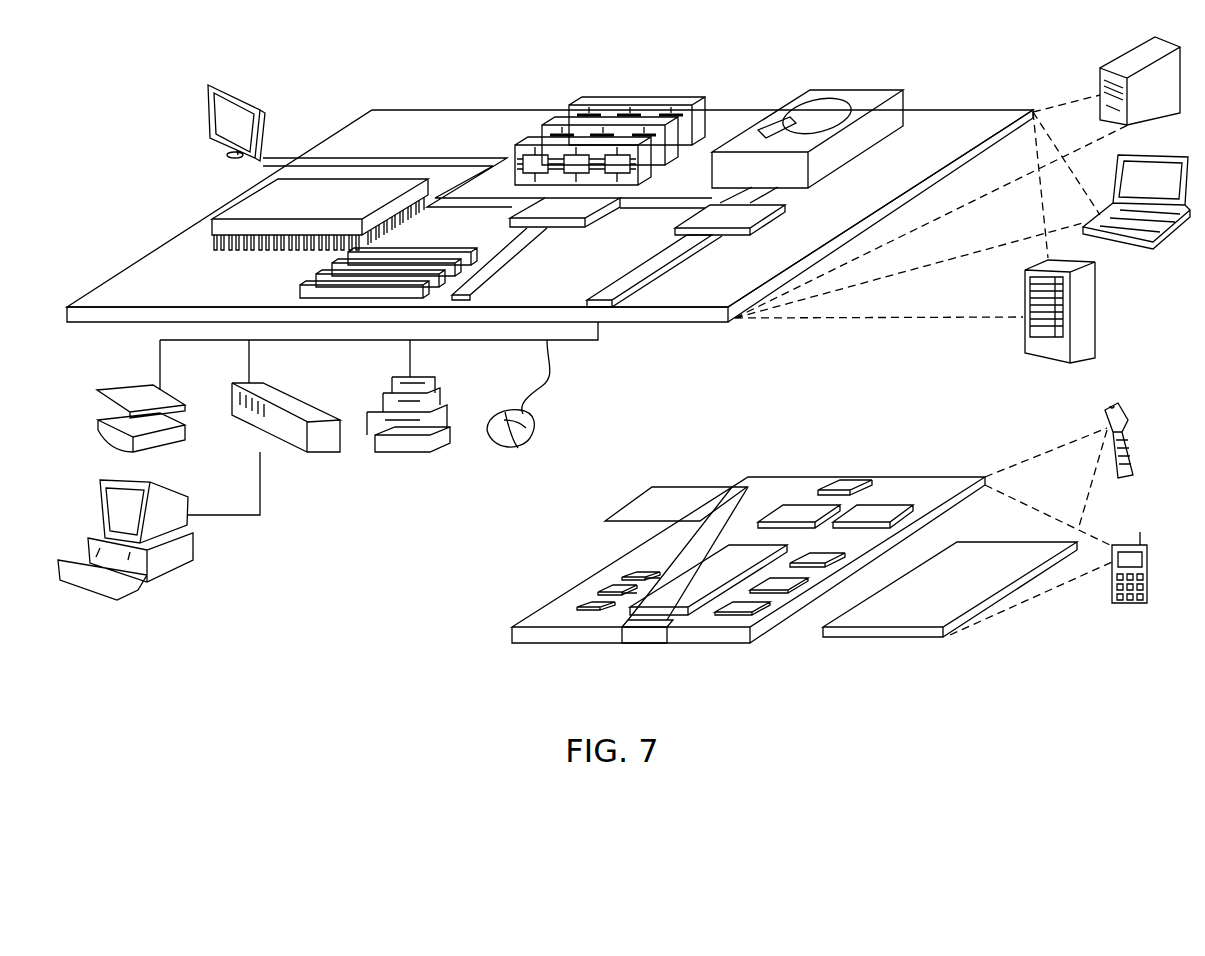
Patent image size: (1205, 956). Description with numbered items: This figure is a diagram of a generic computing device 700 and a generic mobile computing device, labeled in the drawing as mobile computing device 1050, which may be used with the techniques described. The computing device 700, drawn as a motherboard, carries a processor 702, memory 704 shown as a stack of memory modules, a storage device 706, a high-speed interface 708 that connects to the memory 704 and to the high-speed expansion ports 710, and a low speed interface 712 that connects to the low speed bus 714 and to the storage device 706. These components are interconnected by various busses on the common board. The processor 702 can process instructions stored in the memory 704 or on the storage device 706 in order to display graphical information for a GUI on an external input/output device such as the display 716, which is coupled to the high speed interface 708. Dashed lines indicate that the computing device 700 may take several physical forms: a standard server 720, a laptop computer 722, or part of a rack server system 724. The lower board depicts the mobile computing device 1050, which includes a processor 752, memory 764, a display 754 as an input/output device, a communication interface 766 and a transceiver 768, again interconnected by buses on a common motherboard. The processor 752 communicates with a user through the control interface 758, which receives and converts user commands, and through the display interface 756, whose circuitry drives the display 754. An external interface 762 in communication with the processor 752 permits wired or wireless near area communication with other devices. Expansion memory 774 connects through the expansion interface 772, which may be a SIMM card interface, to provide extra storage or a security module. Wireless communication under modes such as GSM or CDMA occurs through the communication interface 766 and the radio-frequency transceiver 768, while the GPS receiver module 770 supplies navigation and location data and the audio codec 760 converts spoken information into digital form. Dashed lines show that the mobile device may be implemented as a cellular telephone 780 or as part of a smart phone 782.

The computing device 700 is at (328, 62).
The processor 702 is at (232, 205).
The memory 704 is at (636, 103).
The storage device 706 is at (845, 87).
The high-speed interface 708 is at (575, 207).
The high-speed expansion ports 710 is at (322, 274).
The low speed interface 712 is at (705, 210).
The low speed bus 714 is at (600, 298).
The display 716 is at (212, 82).
The standard server 720 is at (1118, 64).
The laptop computer 722 is at (1167, 152).
The rack server system 724 is at (1097, 311).
The integrated circuit package 1050 is at (475, 650).
The processor 752 is at (680, 583).
The display 754 is at (985, 553).
The display interface 756 is at (752, 605).
The control interface 758 is at (785, 583).
The audio codec 760 is at (820, 553).
The external interface 762 is at (645, 630).
The memory 764 is at (600, 583).
The communication interface 766 is at (797, 502).
The transceiver 768 is at (880, 505).
The GPS receiver module 770 is at (843, 483).
The expansion interface 772 is at (732, 486).
The expansion memory 774 is at (655, 486).
The cellular telephone 780 is at (1114, 408).
The smart phone 782 is at (1122, 540).